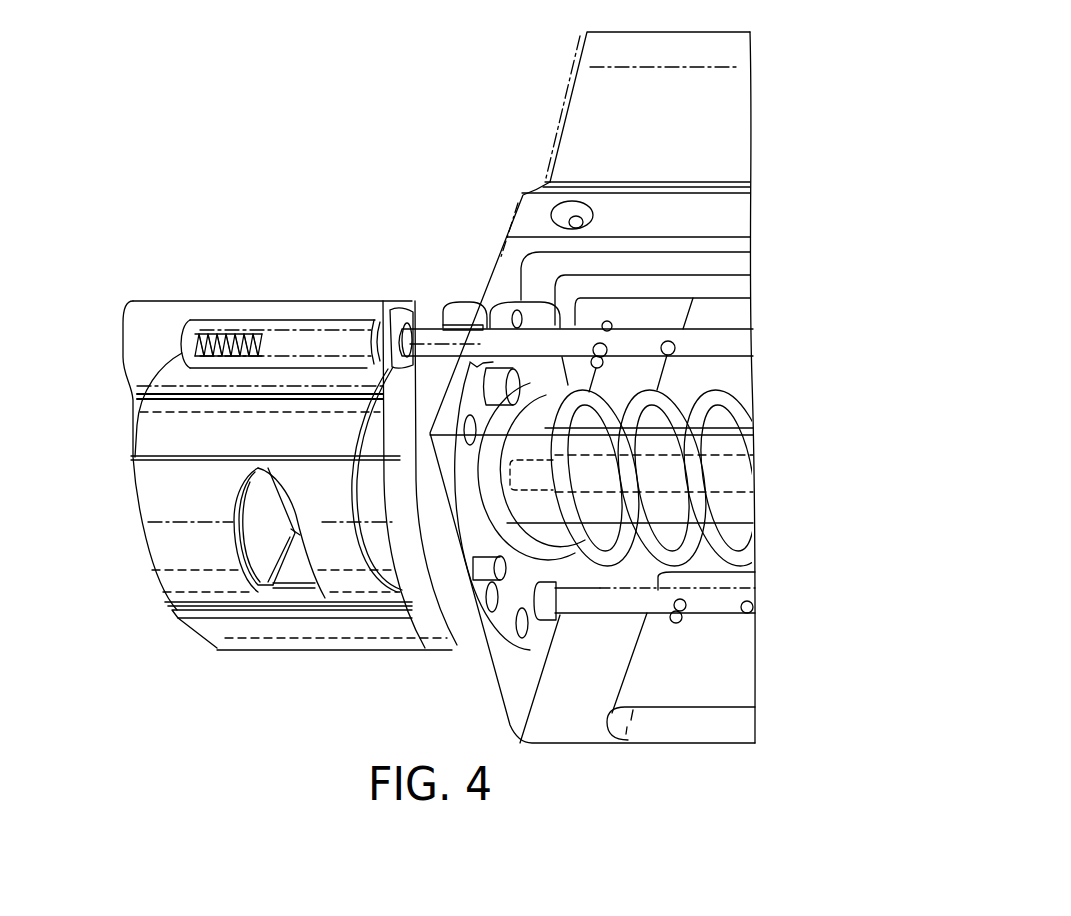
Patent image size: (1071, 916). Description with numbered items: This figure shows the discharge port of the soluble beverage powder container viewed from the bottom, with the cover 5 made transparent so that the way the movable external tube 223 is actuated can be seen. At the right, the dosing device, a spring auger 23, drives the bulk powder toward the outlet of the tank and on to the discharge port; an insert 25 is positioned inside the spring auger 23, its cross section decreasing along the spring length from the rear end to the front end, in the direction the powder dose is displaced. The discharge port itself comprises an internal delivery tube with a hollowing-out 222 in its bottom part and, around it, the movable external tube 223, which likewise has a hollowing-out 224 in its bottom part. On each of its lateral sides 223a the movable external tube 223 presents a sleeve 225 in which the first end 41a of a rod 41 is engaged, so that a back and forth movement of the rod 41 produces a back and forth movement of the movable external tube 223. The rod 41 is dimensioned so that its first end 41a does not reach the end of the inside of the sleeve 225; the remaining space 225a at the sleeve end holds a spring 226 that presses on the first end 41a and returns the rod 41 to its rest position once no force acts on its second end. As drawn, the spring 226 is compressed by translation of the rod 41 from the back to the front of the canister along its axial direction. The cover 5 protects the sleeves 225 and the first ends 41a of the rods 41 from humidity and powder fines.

The cover 5 is at (143, 320).
The movable external tube 223 is at (163, 538).
The lateral side 223a is at (273, 330).
The sleeve 225 is at (352, 320).
The space 225a is at (205, 323).
The spring 226 is at (240, 334).
The first end 41a is at (270, 343).
The rod 41 is at (708, 337).
The spring auger 23 is at (733, 400).
The insert 25 is at (743, 473).
The hollowing-out 222 is at (313, 597).
The hollowing-out 224 is at (277, 562).